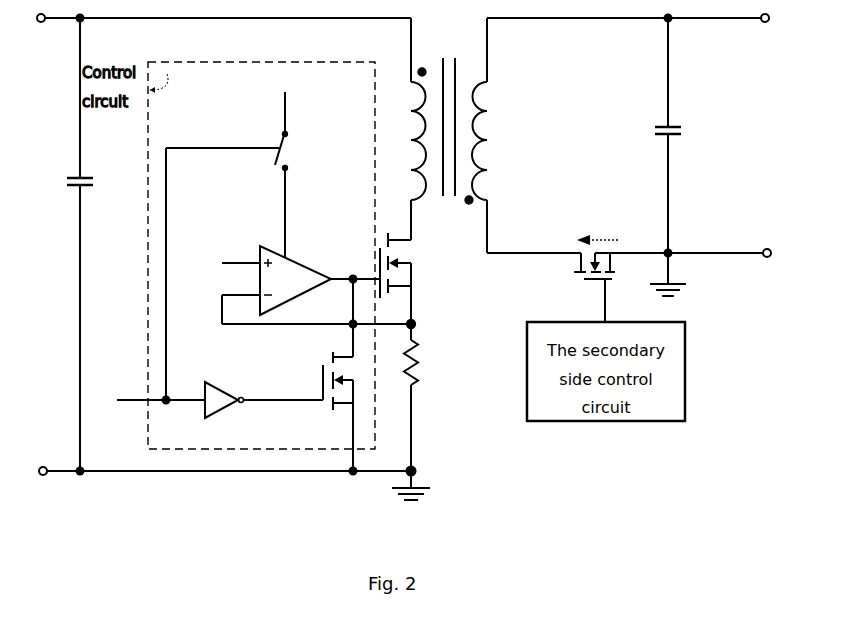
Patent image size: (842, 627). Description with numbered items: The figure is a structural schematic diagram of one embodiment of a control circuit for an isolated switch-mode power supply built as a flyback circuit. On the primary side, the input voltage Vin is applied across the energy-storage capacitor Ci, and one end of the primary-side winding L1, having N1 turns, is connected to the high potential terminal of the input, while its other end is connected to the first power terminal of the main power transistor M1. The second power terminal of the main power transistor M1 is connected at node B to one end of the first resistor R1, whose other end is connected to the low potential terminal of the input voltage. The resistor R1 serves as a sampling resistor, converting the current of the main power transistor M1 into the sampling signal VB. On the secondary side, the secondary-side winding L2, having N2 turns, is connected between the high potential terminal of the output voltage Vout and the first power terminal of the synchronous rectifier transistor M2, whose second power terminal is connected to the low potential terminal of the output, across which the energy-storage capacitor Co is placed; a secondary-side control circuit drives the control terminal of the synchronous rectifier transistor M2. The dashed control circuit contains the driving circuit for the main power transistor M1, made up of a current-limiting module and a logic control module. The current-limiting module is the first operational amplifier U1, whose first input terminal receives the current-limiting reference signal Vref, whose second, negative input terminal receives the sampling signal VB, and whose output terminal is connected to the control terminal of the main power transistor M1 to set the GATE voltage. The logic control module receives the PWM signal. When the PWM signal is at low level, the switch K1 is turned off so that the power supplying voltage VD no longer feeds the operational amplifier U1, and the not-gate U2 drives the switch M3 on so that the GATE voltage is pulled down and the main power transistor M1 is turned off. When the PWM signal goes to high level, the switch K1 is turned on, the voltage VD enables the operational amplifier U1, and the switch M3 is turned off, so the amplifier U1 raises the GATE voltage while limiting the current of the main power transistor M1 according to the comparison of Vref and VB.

The input voltage Vin is at (48, 32).
The output voltage Vout is at (767, 32).
The energy-storage capacitor Ci is at (71, 170).
The energy-storage capacitor Co is at (661, 135).
The number of turns of the primary-side winding N1 is at (411, 127).
The primary-side winding L1 is at (403, 134).
The number of turns of the secondary-side winding N2 is at (486, 127).
The secondary-side winding L2 is at (489, 143).
The power supplying voltage VD is at (298, 107).
The switch K1 is at (297, 196).
The first operational amplifier U1 is at (295, 280).
The current-limiting reference signal Vref is at (236, 249).
The sampling signal VB is at (229, 309).
The GATE voltage GATE is at (350, 273).
The main power transistor M1 is at (416, 262).
The node B is at (419, 329).
The first resistor R1 is at (424, 397).
The PWM signal PWM is at (148, 390).
The not-gate U2 is at (264, 411).
The switch M3 is at (332, 392).
The synchronous rectifier transistor M2 is at (581, 273).